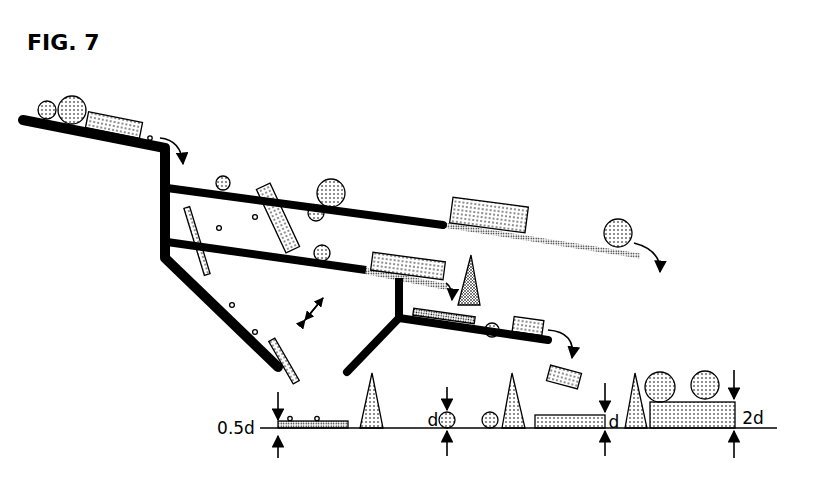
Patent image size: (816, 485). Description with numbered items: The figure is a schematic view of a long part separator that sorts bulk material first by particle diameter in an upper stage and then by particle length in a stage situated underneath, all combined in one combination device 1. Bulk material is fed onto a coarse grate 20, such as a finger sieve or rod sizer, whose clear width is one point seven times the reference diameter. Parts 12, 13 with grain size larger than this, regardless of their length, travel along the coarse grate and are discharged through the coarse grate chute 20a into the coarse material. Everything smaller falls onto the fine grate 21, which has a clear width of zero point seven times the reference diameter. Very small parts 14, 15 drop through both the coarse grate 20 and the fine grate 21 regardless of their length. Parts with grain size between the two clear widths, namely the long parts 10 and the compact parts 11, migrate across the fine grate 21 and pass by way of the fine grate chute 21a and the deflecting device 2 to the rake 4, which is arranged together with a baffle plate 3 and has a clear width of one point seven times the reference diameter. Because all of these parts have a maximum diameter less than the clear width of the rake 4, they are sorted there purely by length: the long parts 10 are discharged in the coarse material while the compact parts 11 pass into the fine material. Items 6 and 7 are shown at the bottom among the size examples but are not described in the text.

The combination device 1 is at (150, 231).
The coarse grate 20 is at (305, 218).
The coarse grate chute 20a is at (541, 237).
The fine grate 21 is at (266, 243).
The fine grate chute 21a is at (400, 276).
The part with grain size greater than 1.7 d 12 is at (489, 205).
The part with grain size greater than 1.7 d 13 is at (630, 234).
The deflecting device 2 is at (497, 279).
The baffle plate 3 is at (428, 341).
The rake 4 is at (546, 352).
The part with grain size less than 0.7 d 14 is at (299, 361).
The part with grain size less than 0.7 d 15 is at (252, 314).
The thin flat particle (0.5d) 6 is at (313, 435).
The thick particle (2d) 7 is at (646, 412).
The long part 10 is at (570, 410).
The compact part 11 is at (485, 410).